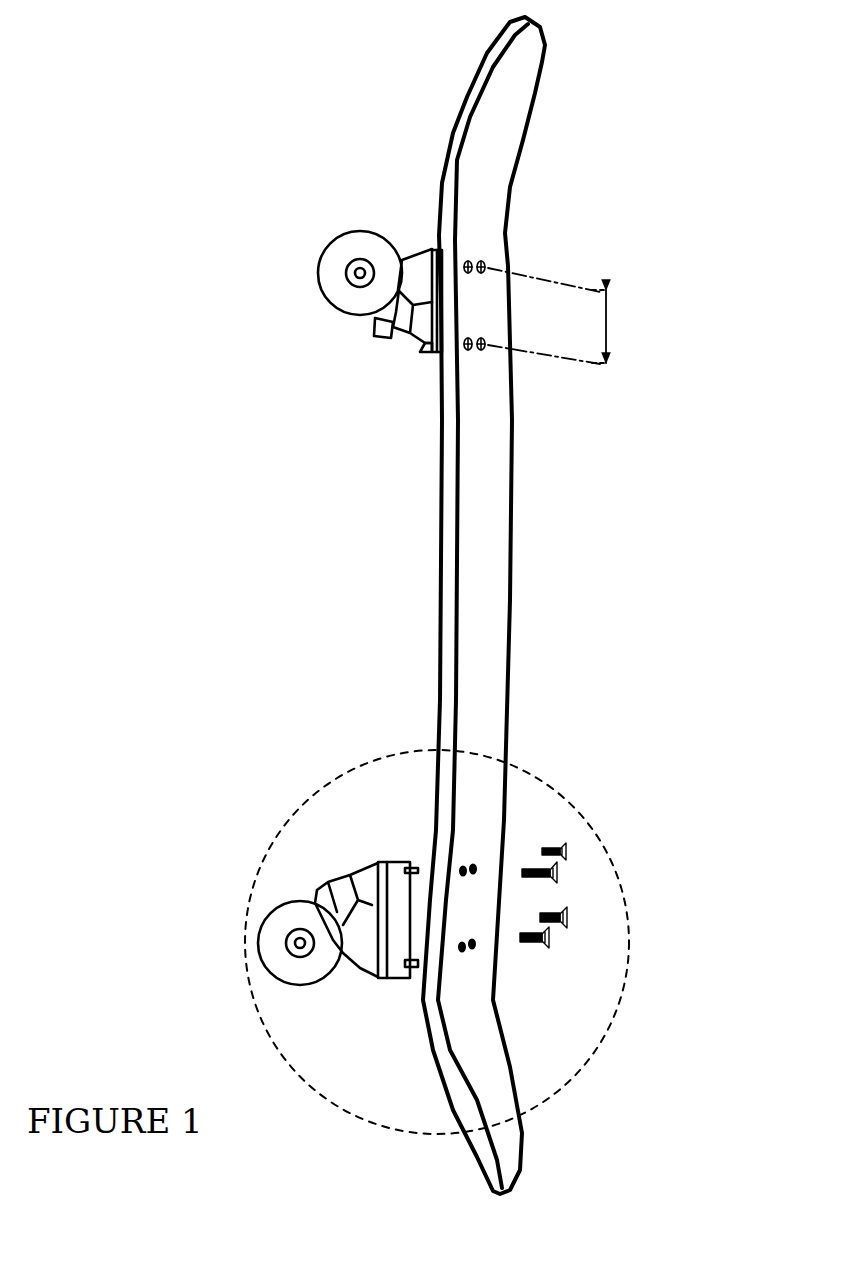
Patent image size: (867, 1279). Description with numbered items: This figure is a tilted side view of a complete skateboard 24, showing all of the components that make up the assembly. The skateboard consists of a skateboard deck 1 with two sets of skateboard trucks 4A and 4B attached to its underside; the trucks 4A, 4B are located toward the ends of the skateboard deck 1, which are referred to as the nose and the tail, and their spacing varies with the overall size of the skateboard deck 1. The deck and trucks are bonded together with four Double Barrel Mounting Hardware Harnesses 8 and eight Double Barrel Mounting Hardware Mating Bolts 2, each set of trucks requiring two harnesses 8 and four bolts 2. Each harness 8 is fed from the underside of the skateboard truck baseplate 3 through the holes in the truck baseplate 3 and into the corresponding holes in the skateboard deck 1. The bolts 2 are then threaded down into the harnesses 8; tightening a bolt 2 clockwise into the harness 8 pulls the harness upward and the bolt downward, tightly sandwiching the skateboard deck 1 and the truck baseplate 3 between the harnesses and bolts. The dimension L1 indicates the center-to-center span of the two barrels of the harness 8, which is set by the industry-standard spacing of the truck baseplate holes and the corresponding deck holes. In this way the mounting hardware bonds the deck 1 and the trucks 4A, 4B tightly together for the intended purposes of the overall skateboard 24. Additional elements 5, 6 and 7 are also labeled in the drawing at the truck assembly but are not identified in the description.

The skateboard deck 1 is at (525, 91).
The Double Barrel Mounting Hardware Mating Bolt 2 is at (561, 841).
The skateboard truck baseplate 3 is at (394, 906).
The skateboard truck 4A is at (425, 347).
The skateboard truck 4B is at (362, 889).
The hanger 5 is at (400, 341).
The kingpin nut and wheel 6 is at (371, 329).
The baseplate 7 is at (414, 251).
The Double Barrel Mounting Hardware Harness 8 is at (415, 865).
The skateboard 24 is at (698, 588).
The center to center dimension L1 is at (613, 340).